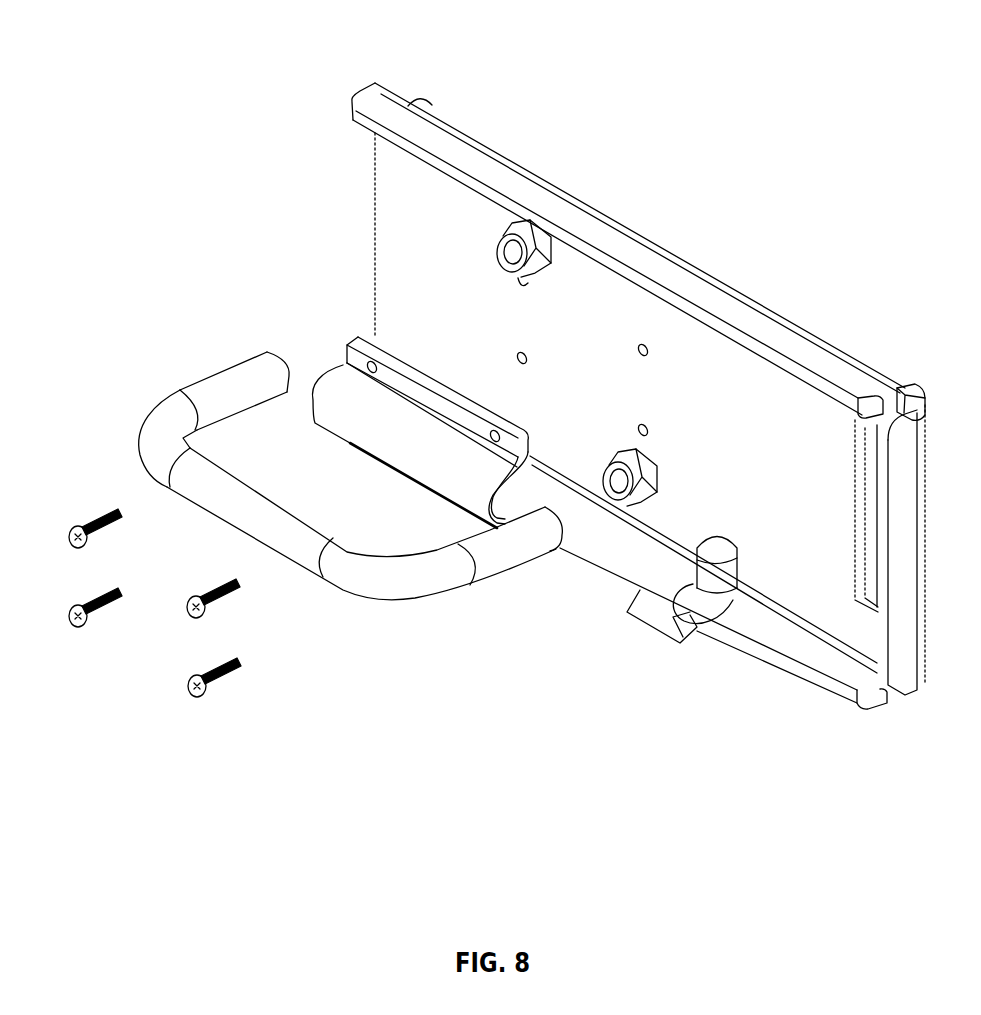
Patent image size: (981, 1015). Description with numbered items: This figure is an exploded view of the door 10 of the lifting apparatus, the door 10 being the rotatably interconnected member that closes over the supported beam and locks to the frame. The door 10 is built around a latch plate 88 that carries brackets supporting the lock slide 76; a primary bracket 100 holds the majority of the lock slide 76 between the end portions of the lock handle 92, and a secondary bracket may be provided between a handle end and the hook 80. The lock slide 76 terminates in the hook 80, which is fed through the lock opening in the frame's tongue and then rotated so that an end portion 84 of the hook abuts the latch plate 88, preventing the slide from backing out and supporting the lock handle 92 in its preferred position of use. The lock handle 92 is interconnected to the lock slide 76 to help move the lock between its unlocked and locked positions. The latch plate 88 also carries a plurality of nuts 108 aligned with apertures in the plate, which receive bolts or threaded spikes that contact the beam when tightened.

The door 10 is at (560, 361).
The lock slide 76 is at (307, 367).
The hook 80 is at (720, 575).
The end portion of the hook 84 is at (653, 458).
The latch plate 88 is at (402, 262).
The lock handle 92 is at (163, 457).
The primary bracket 100 is at (453, 490).
The nuts 108 is at (543, 233).